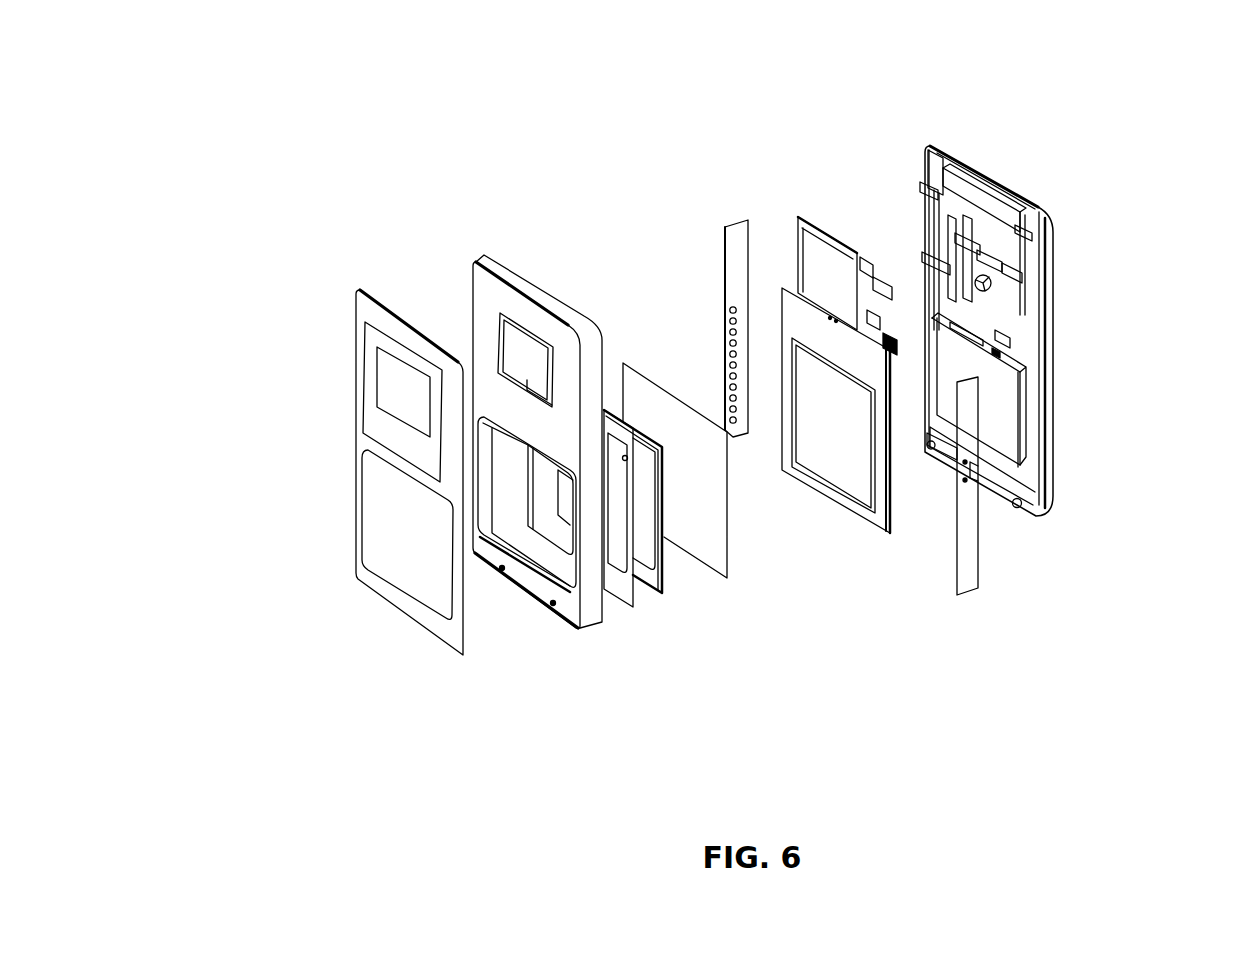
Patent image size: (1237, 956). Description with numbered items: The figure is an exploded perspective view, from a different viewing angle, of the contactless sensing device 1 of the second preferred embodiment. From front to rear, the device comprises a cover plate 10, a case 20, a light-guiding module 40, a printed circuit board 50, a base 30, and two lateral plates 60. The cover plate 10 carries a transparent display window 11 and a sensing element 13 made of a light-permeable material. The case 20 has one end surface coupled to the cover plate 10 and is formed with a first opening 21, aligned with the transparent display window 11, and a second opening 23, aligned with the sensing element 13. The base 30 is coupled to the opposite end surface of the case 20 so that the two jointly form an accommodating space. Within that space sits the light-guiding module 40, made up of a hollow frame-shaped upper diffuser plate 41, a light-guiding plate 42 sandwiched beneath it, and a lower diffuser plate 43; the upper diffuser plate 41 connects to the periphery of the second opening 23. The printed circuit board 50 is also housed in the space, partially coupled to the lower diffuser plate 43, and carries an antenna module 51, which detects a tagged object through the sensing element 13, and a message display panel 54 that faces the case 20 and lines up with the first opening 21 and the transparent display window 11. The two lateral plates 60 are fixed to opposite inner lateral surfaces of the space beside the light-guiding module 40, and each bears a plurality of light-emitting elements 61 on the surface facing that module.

The contactless sensing device 1 is at (1081, 150).
The cover plate 10 is at (387, 300).
The transparent display window 11 is at (388, 383).
The sensing element 13 is at (397, 533).
The case 20 is at (547, 278).
The first opening 21 is at (523, 355).
The second opening 23 is at (516, 540).
The base 30 is at (1053, 320).
The light-guiding module 40 is at (737, 703).
The upper diffuser plate 41 is at (623, 605).
The light-guiding plate 42 is at (665, 588).
The lower diffuser plate 43 is at (708, 570).
The printed circuit board 50 is at (830, 453).
The antenna module 51 is at (883, 537).
The message display panel 54 is at (832, 288).
The lateral plate 60 is at (738, 222).
The light-emitting element 61 is at (727, 308).